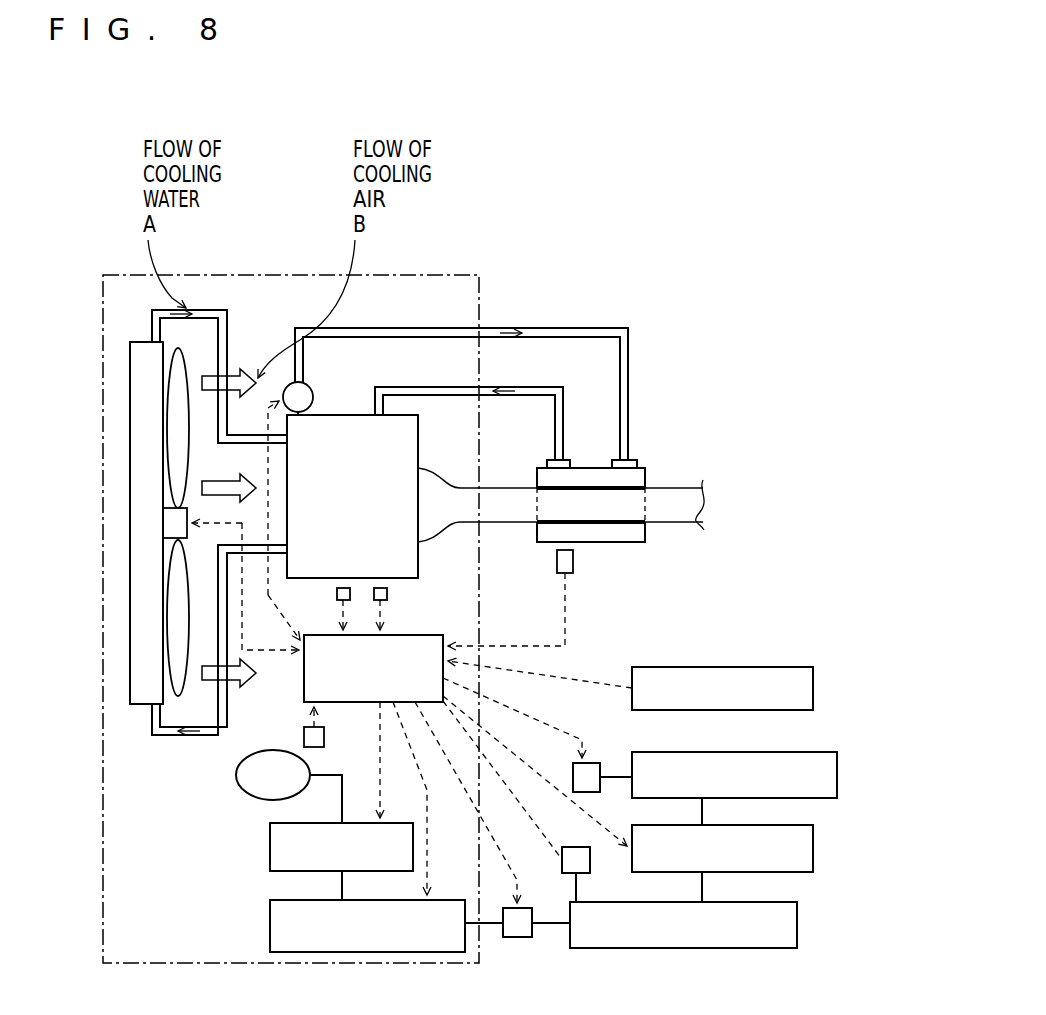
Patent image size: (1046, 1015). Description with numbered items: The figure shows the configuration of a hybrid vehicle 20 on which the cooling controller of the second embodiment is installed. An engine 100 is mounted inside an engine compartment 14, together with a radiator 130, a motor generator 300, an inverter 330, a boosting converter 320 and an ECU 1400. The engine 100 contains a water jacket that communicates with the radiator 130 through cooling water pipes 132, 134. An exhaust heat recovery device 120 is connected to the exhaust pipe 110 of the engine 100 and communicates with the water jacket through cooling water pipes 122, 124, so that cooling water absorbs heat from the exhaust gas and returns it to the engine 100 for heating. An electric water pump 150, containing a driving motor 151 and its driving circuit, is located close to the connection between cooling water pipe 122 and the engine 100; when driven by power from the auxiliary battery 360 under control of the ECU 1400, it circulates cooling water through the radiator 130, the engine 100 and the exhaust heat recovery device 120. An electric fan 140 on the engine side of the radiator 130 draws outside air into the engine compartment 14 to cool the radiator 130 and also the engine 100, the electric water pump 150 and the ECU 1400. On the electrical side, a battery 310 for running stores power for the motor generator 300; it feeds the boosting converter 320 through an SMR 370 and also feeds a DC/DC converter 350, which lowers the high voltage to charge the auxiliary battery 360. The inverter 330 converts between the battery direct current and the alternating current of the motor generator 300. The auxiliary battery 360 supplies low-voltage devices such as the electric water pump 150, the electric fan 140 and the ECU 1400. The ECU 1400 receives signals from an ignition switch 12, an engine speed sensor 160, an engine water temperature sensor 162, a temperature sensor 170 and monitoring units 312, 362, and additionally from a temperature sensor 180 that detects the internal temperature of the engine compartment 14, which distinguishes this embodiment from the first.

The ignition switch 12 is at (760, 667).
The engine compartment 14 is at (103, 712).
The hybrid vehicle 20 is at (255, 114).
The engine 100 is at (418, 452).
The exhaust pipe 110 is at (510, 522).
The exhaust heat recovery device 120 is at (625, 545).
The cooling water pipe 122 is at (572, 328).
The cooling water pipe 124 is at (533, 387).
The radiator 130 is at (130, 378).
The cooling water pipe 132 is at (228, 330).
The cooling water pipe 134 is at (157, 740).
The electric fan 140 is at (163, 518).
The electric water pump 150 is at (318, 399).
The driving motor 151 is at (314, 386).
The engine speed sensor 160 is at (337, 594).
The engine water temperature sensor 162 is at (387, 596).
The temperature sensor 170 is at (573, 565).
The temperature sensor 180 is at (304, 737).
The motor generator 300 is at (245, 787).
The battery for running 310 is at (797, 923).
The monitoring unit 312 is at (590, 865).
The boosting converter 320 is at (270, 922).
The inverter 330 is at (270, 847).
The DC/DC converter 350 is at (813, 850).
The auxiliary battery 360 is at (837, 775).
The monitoring unit 362 is at (592, 792).
The SMR 370 is at (520, 937).
The ECU 1400 is at (355, 702).